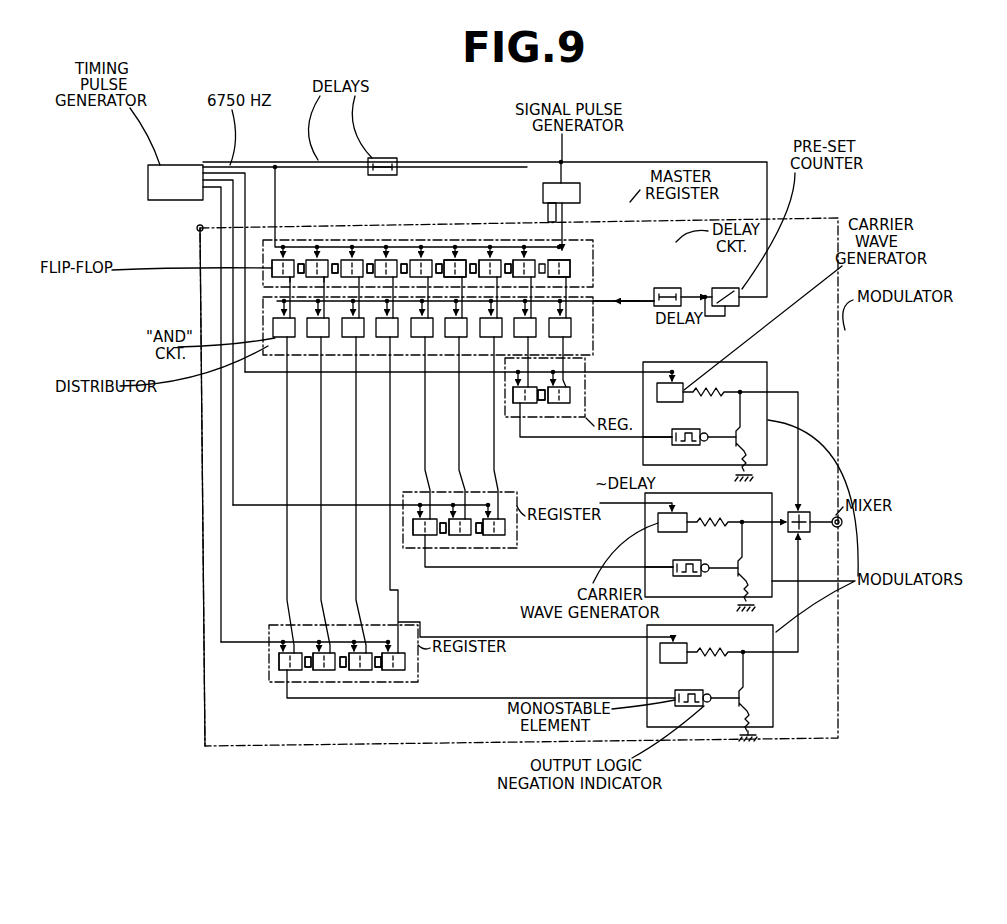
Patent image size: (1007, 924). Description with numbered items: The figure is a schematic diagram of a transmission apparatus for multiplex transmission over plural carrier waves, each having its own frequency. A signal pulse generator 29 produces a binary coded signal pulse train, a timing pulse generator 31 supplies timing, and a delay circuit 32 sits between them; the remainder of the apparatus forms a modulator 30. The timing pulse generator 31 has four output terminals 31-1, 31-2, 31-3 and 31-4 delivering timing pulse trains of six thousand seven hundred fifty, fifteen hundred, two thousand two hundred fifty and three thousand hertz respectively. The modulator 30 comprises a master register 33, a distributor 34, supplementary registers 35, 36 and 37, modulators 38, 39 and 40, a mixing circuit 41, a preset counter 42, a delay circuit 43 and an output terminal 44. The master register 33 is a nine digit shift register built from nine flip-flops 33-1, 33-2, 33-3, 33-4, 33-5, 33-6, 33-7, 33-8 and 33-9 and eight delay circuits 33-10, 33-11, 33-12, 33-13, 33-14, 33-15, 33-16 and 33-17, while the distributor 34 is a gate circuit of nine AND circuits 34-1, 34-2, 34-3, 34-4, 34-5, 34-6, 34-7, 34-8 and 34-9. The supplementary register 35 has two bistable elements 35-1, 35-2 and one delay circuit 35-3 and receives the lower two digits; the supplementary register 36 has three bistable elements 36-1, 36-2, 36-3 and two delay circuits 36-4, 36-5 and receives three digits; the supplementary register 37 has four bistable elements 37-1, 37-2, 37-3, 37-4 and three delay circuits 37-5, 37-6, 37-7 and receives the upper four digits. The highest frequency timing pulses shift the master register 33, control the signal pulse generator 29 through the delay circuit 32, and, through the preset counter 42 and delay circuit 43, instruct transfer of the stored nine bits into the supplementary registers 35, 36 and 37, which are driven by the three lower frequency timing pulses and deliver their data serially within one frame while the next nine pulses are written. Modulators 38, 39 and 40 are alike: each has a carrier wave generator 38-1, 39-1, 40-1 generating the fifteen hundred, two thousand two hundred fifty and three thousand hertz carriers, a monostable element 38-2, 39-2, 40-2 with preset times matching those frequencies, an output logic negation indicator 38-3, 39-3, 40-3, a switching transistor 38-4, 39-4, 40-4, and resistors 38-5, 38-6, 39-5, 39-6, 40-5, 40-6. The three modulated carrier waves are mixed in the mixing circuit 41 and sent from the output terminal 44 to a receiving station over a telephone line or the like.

The signal pulse generator 29 is at (576, 195).
The modulator 30 is at (840, 347).
The timing pulse generator 31 is at (156, 200).
The output terminal 31-1 is at (205, 164).
The output terminal 31-2 is at (215, 163).
The output terminal 31-3 is at (194, 200).
The output terminal 31-4 is at (197, 231).
The delay circuit 32 is at (381, 158).
The master register 33 is at (582, 231).
The flip-flop 33-1 is at (571, 268).
The flip-flop 33-2 is at (560, 258).
The flip-flop 33-3 is at (516, 262).
The flip-flop 33-4 is at (471, 264).
The flip-flop 33-5 is at (449, 262).
The flip-flop 33-6 is at (403, 264).
The flip-flop 33-7 is at (334, 264).
The flip-flop 33-8 is at (300, 264).
The flip-flop 33-9 is at (272, 262).
The delay circuit 33-10 is at (568, 280).
The delay circuit 33-11 is at (549, 218).
The delay circuit 33-12 is at (506, 264).
The delay circuit 33-13 is at (483, 262).
The delay circuit 33-14 is at (437, 264).
The delay circuit 33-15 is at (369, 264).
The delay circuit 33-16 is at (292, 292).
The delay circuit 33-17 is at (325, 281).
The distributor 34 is at (590, 302).
The AND circuit 34-1 is at (596, 303).
The AND circuit 34-2 is at (566, 340).
The AND circuit 34-3 is at (552, 345).
The AND circuit 34-4 is at (459, 342).
The AND circuit 34-5 is at (425, 342).
The AND circuit 34-6 is at (390, 342).
The AND circuit 34-7 is at (356, 342).
The AND circuit 34-8 is at (321, 342).
The AND circuit 34-9 is at (287, 342).
The supplementary register 35 is at (588, 406).
The bistable element 35-1 is at (542, 400).
The bistable element 35-2 is at (528, 403).
The delay circuit 35-3 is at (562, 403).
The supplementary register 36 is at (520, 540).
The bistable element 36-1 is at (479, 535).
The bistable element 36-2 is at (460, 535).
The bistable element 36-3 is at (433, 535).
The delay circuit 36-4 is at (495, 535).
The delay circuit 36-5 is at (444, 533).
The supplementary register 37 is at (432, 662).
The bistable element 37-1 is at (405, 670).
The bistable element 37-2 is at (360, 670).
The bistable element 37-3 is at (325, 670).
The bistable element 37-4 is at (284, 670).
The delay circuit 37-5 is at (377, 670).
The delay circuit 37-6 is at (343, 670).
The delay circuit 37-7 is at (308, 670).
The modulator 38 is at (770, 364).
The carrier wave generator 38-1 is at (676, 383).
The monostable element 38-2 is at (670, 431).
The output logic negation indicator 38-3 is at (736, 433).
The switching transistor 38-4 is at (740, 447).
The resistor 38-5 is at (716, 390).
The resistor 38-6 is at (744, 472).
The modulator 39 is at (776, 493).
The carrier wave generator 39-1 is at (658, 538).
The monostable element 39-2 is at (673, 563).
The output logic negation indicator 39-3 is at (738, 565).
The switching transistor 39-4 is at (742, 580).
The resistor 39-5 is at (720, 520).
The resistor 39-6 is at (746, 602).
The modulator 40 is at (776, 692).
The carrier wave generator 40-1 is at (661, 651).
The monostable element 40-2 is at (675, 695).
The output logic negation indicator 40-3 is at (739, 697).
The switching transistor 40-4 is at (743, 708).
The resistor 40-5 is at (720, 651).
The resistor 40-6 is at (752, 732).
The mixing circuit 41 is at (770, 594).
The preset counter 42 is at (725, 288).
The delay circuit 43 is at (668, 288).
The output terminal 44 is at (834, 527).